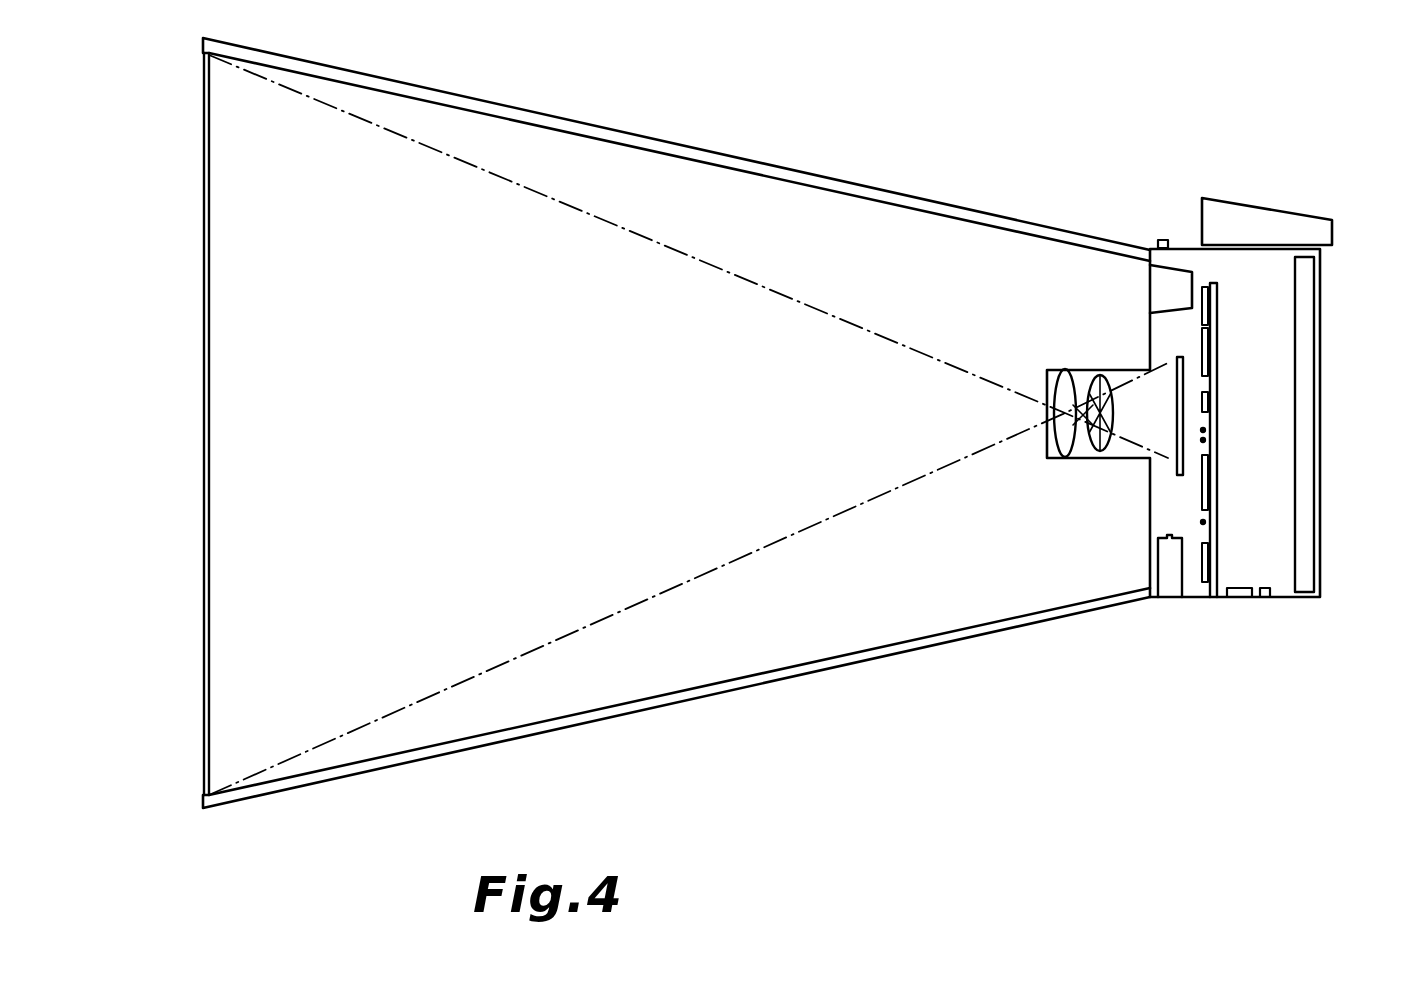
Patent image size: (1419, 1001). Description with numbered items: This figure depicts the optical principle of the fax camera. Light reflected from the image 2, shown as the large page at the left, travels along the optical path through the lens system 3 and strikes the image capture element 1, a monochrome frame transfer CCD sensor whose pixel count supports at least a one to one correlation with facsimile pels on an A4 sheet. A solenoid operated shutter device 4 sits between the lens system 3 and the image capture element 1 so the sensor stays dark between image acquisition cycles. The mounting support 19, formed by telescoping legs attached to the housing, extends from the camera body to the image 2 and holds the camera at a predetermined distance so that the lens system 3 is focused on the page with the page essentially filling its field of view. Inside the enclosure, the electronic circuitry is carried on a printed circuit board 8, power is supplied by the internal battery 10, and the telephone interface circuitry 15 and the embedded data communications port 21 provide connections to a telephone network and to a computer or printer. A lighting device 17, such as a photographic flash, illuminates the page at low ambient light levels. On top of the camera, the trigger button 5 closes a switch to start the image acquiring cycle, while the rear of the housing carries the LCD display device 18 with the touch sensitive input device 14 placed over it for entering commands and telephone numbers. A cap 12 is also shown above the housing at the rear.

The image capture element 1 is at (1178, 478).
The image 2 is at (205, 428).
The lens system 3 is at (1047, 420).
The shutter device 4 is at (1082, 437).
The trigger button 5 is at (1157, 237).
The printed circuit board 8 is at (1215, 440).
The battery 10 is at (1158, 568).
The cap 12 is at (1268, 203).
The input device 14 is at (1320, 422).
The telephone interface circuitry 15 is at (1268, 598).
The lighting device 17 is at (1147, 287).
The LCD display device 18 is at (1296, 456).
The mounting support 19 is at (680, 143).
The data communications port 21 is at (1225, 598).